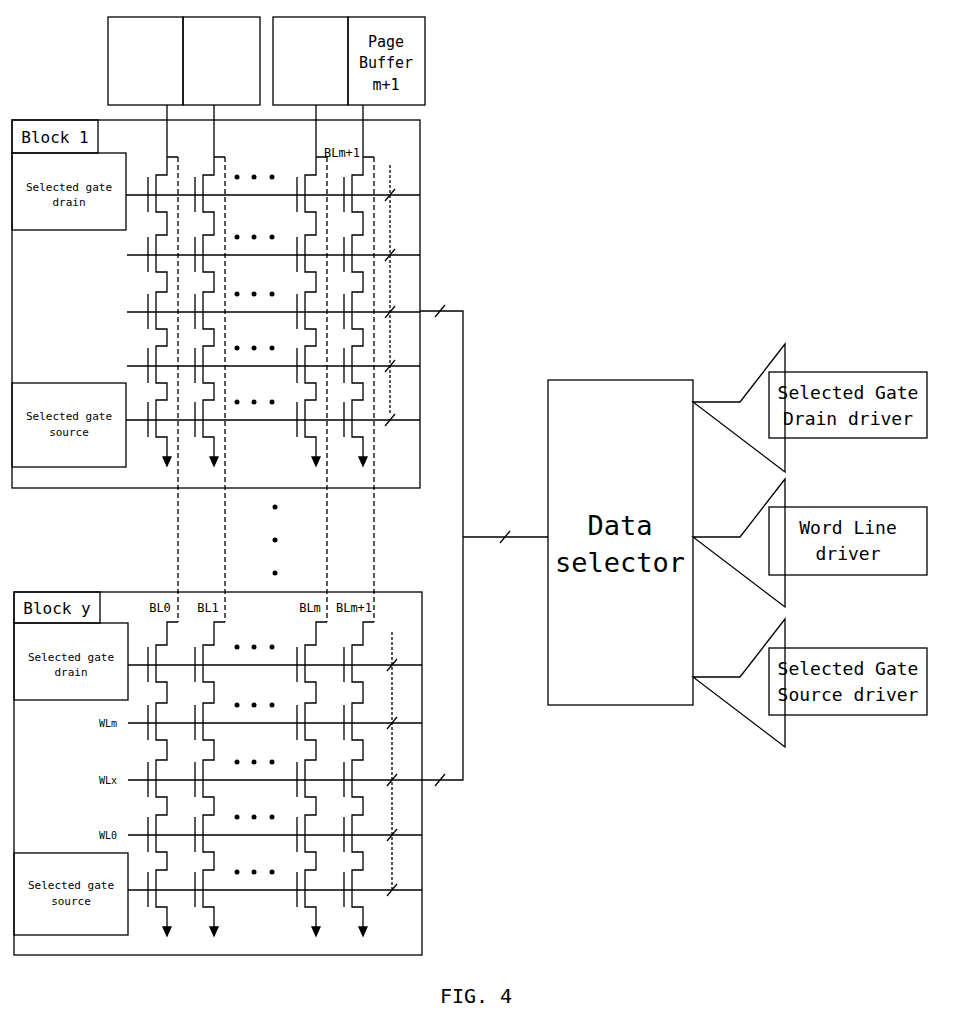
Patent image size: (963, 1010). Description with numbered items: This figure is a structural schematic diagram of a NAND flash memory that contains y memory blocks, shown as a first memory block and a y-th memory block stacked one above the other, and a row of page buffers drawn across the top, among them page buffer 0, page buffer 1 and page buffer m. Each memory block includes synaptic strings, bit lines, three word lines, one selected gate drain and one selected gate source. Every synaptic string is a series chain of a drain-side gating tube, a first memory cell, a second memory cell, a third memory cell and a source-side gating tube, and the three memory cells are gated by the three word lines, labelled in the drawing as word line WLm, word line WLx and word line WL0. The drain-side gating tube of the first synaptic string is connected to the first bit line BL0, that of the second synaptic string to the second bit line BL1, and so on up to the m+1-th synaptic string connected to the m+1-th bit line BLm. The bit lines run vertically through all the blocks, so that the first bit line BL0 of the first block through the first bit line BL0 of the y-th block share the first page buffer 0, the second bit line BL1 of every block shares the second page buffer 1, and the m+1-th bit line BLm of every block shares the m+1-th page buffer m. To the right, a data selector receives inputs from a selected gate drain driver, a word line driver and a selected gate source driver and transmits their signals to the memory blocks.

The page buffer 0 is at (145, 61).
The page buffer 1 is at (221, 61).
The page buffer m is at (310, 61).
The first bit line BL0 is at (158, 363).
The second bit line BL1 is at (207, 363).
The m+1-th bit line BLm is at (308, 363).
The word line m WLm is at (259, 255).
The word line x WLx is at (259, 312).
The word line 0 WL0 is at (259, 366).